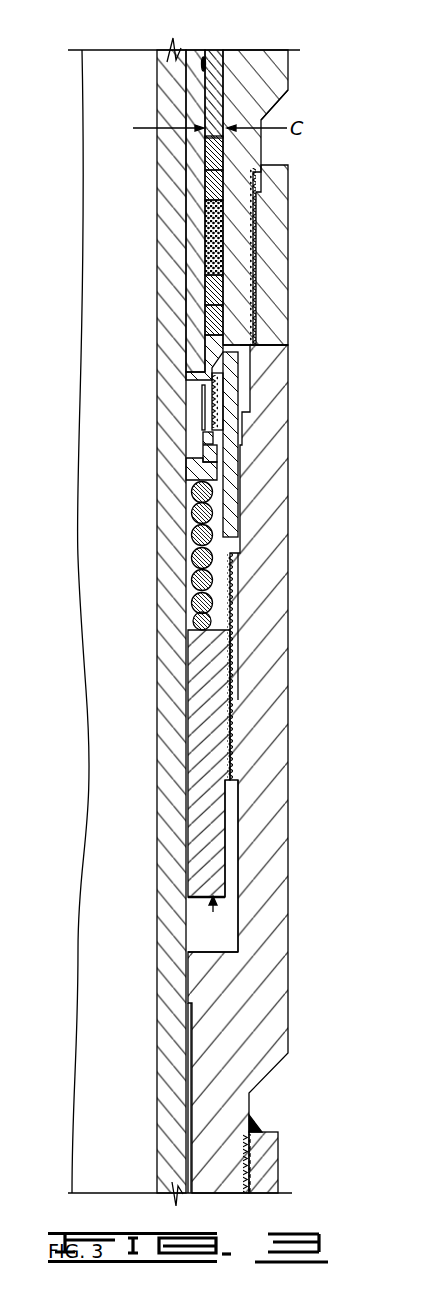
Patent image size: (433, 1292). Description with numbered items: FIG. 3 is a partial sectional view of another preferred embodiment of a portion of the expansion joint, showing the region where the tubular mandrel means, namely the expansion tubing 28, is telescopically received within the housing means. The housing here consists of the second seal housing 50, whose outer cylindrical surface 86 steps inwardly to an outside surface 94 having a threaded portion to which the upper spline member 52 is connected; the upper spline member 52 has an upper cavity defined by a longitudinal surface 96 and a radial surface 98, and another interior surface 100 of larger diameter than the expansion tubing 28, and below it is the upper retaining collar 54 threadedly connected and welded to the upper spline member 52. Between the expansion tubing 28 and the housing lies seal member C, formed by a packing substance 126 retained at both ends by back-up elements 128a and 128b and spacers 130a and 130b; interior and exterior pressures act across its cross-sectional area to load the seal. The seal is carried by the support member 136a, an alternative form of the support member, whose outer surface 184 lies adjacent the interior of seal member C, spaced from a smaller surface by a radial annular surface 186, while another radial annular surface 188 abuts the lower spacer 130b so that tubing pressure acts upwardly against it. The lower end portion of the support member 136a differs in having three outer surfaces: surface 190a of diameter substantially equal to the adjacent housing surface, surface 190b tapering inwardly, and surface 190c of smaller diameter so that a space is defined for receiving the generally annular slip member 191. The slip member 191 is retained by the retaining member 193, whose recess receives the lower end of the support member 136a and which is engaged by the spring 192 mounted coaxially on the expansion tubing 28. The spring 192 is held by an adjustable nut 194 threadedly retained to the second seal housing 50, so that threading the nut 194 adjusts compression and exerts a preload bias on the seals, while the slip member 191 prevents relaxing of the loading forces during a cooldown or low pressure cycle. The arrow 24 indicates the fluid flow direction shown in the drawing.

The flow passage arrow 24 is at (213, 912).
The expansion tubing 28 is at (170, 708).
The second seal housing 50 is at (280, 76).
The upper spline member 52 is at (275, 583).
The upper retaining collar 54 is at (272, 1160).
The outer cylindrical surface 86 is at (290, 94).
The outside surface 94 is at (263, 154).
The longitudinal surface 96 is at (238, 815).
The radial surface 98 is at (200, 950).
The interior surface 100 is at (190, 1053).
The packing substance 126 is at (207, 240).
The back-up element 128a is at (207, 188).
The back-up element 128b is at (207, 285).
The spacer 130a is at (208, 150).
The lower spacer 130b is at (207, 320).
The support member 136a is at (204, 360).
The outer surface 184 is at (206, 84).
The radial annular surface 186 is at (204, 58).
The radial annular surface 188 is at (230, 340).
The outer surface 190a is at (222, 356).
The outer surface 190b is at (208, 382).
The outer surface 190c is at (210, 450).
The slip member 191 is at (213, 436).
The spring 192 is at (214, 540).
The retaining member 193 is at (210, 468).
The adjustable nut 194 is at (222, 745).